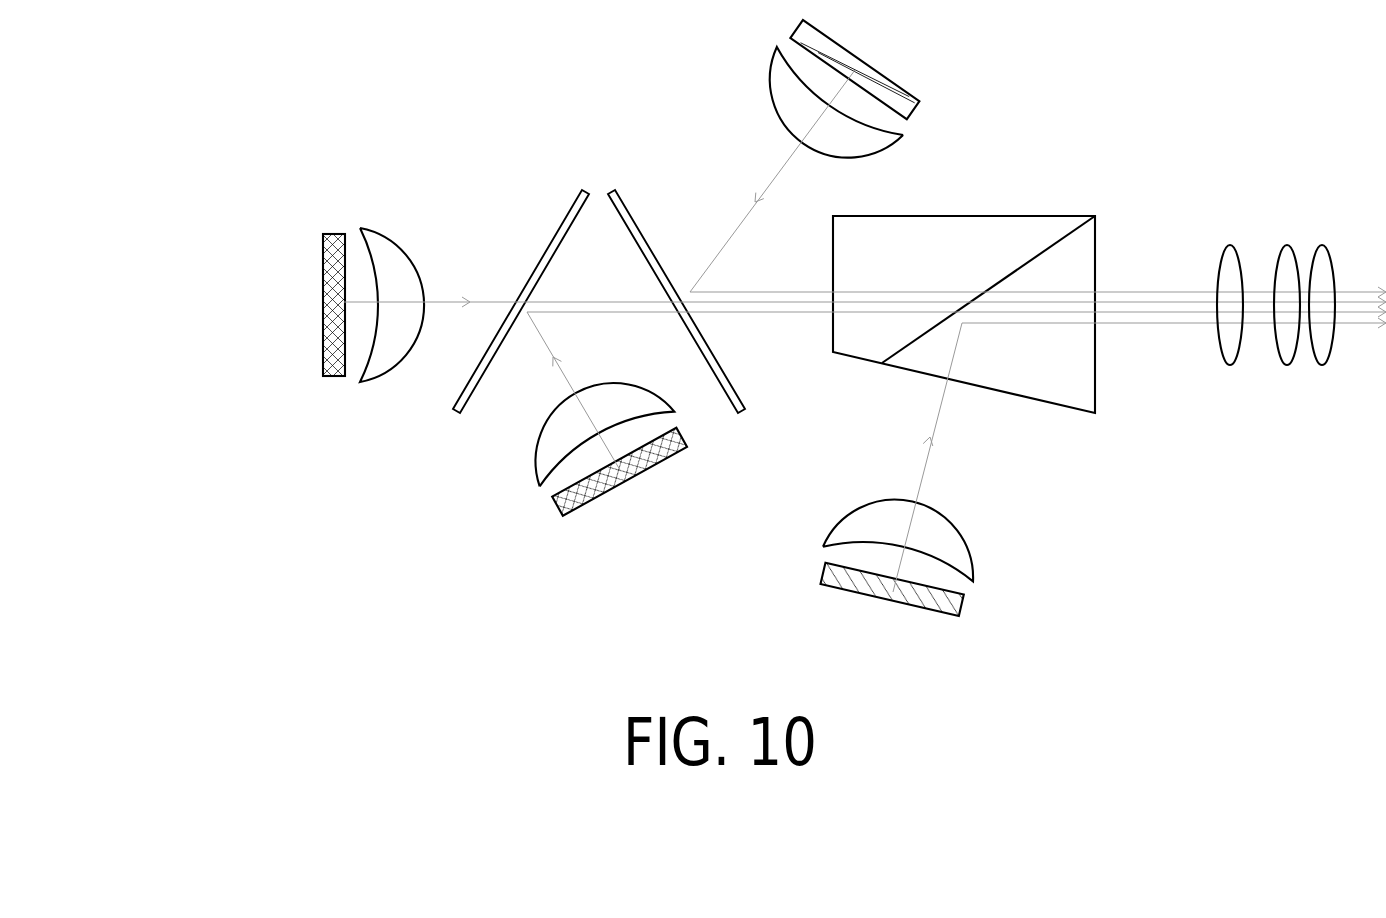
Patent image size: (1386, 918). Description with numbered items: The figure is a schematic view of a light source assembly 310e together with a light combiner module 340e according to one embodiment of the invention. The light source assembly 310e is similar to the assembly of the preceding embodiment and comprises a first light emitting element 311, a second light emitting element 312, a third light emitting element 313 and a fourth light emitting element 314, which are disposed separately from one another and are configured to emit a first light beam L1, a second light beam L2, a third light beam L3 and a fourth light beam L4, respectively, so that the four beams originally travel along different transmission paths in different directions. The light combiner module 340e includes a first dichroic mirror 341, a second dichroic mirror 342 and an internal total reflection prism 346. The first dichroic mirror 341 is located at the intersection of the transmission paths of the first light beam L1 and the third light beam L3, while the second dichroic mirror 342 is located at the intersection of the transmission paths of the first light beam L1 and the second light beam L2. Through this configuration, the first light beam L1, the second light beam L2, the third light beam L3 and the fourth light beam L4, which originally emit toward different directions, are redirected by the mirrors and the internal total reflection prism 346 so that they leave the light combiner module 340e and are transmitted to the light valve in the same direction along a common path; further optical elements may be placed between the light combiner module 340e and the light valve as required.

The light source assembly 310e is at (186, 213).
The first light emitting element 311 is at (793, 35).
The second light emitting element 312 is at (577, 499).
The third light emitting element 313 is at (897, 592).
The fourth light emitting element 314 is at (323, 306).
The light combiner module 340e is at (695, 91).
The first dichroic mirror 341 is at (625, 215).
The second dichroic mirror 342 is at (571, 222).
The internal total reflection prism 346 is at (925, 350).
The first light beam L1 is at (773, 173).
The second light beam L2 is at (540, 332).
The third light beam L3 is at (938, 410).
The fourth light beam L4 is at (452, 300).